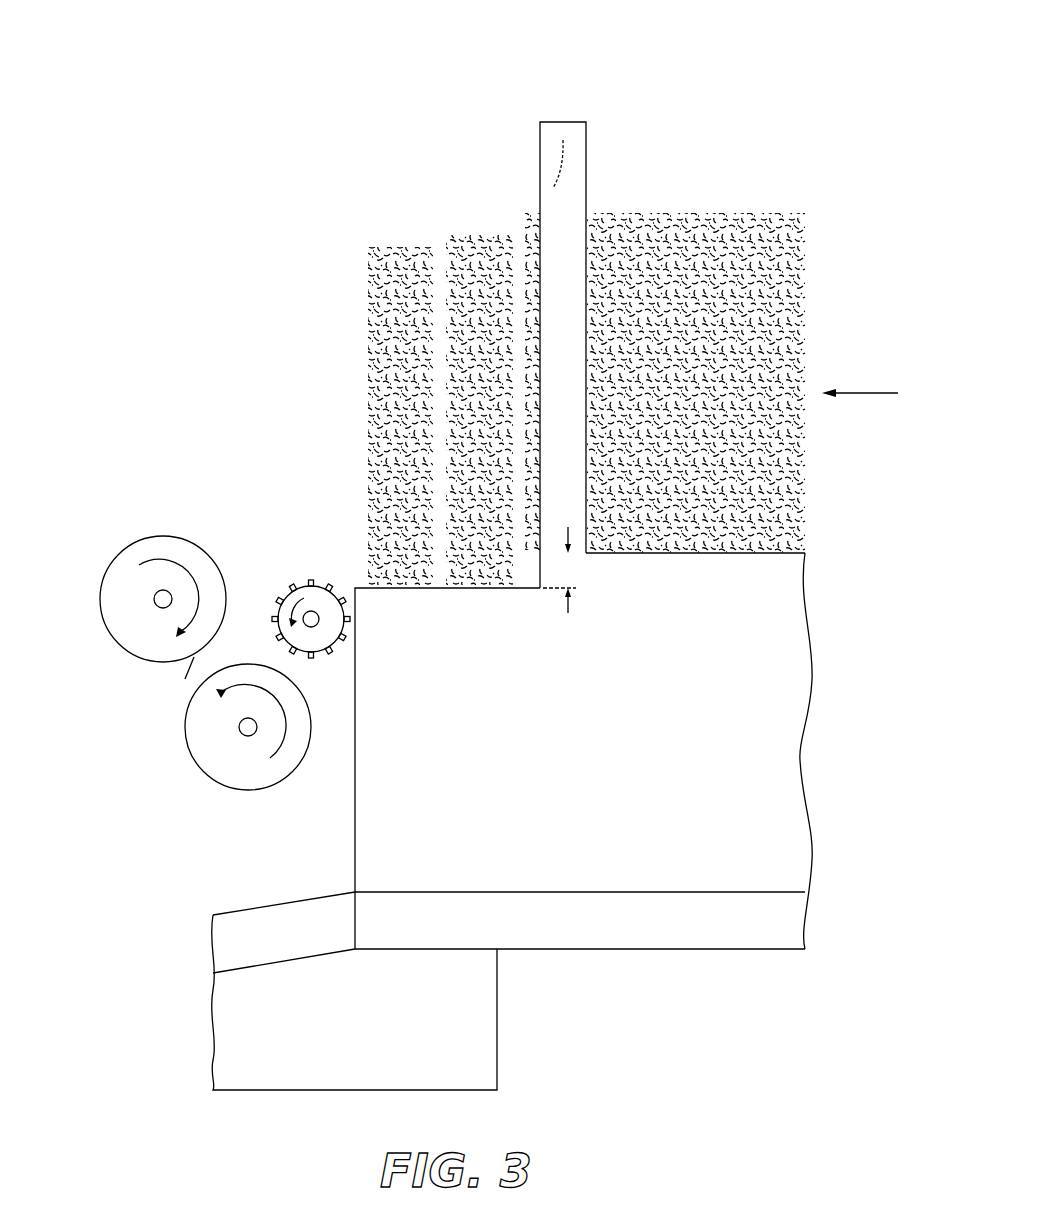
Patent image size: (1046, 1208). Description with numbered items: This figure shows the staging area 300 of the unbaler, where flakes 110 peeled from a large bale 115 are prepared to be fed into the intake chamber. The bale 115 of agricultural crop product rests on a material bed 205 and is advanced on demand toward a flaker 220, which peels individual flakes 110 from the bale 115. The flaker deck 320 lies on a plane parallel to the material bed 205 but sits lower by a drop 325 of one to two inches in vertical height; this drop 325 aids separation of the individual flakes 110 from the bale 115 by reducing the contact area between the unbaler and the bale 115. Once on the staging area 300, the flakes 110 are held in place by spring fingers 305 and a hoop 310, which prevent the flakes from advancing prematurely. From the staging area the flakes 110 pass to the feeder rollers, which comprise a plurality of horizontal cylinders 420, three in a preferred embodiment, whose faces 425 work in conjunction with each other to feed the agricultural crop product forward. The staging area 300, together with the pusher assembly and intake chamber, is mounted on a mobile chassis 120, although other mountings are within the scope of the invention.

The staging area 300 is at (541, 50).
The flakes 110 is at (401, 254).
The large bale 115 is at (683, 176).
The flaker 220 is at (563, 326).
The hoop 310 is at (563, 125).
The spring fingers 305 is at (548, 153).
The material bed 205 is at (719, 554).
The drop 325 is at (570, 568).
The flaker deck 320 is at (450, 590).
The mobile chassis 120 is at (660, 938).
The horizontal cylinders 420 is at (100, 603).
The faces 425 is at (210, 671).